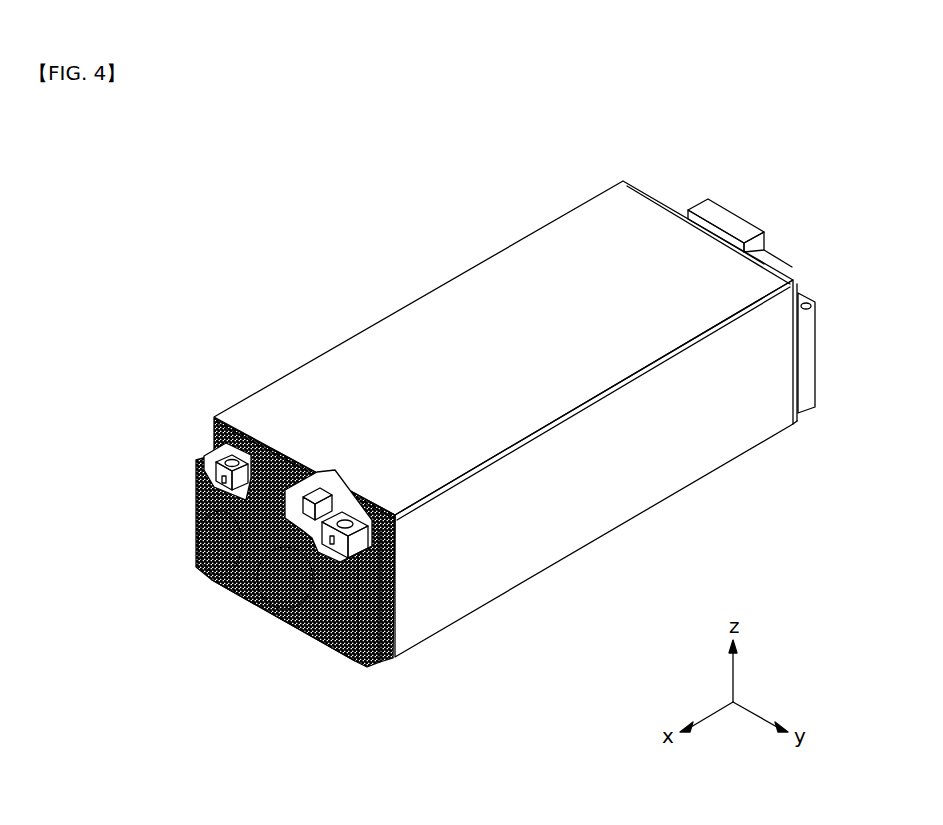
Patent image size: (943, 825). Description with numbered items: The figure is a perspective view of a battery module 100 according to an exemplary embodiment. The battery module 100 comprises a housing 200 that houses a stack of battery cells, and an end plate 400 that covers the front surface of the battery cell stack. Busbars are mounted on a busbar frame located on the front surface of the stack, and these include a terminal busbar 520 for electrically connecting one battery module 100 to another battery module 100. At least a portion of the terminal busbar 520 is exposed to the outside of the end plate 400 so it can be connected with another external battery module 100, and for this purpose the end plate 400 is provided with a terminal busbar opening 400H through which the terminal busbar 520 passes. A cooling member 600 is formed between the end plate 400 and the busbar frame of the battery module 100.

The battery module 100 is at (471, 140).
The housing 200 is at (438, 328).
The end plate 400 is at (727, 225).
The terminal busbar opening 400H is at (200, 532).
The terminal busbar 520 is at (216, 444).
The cooling member 600 is at (313, 638).